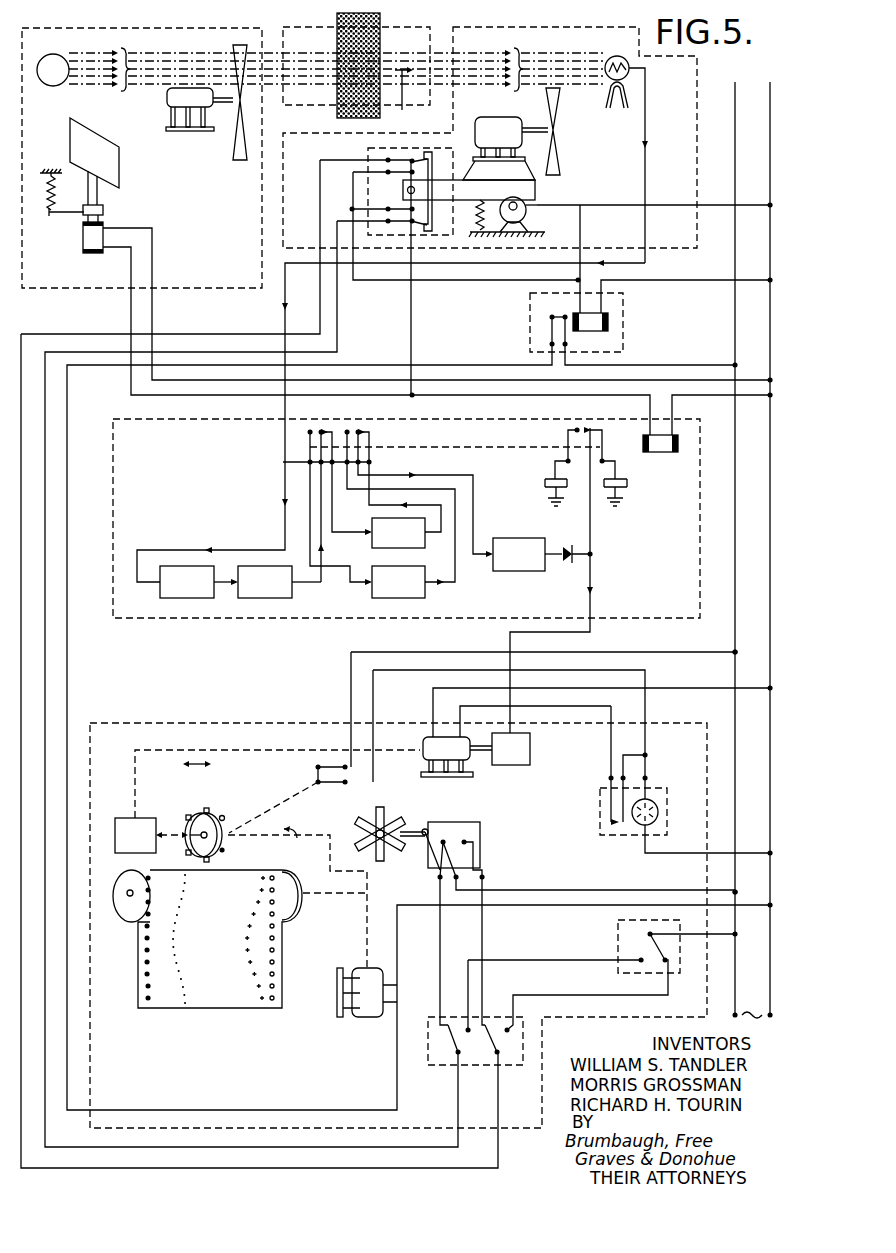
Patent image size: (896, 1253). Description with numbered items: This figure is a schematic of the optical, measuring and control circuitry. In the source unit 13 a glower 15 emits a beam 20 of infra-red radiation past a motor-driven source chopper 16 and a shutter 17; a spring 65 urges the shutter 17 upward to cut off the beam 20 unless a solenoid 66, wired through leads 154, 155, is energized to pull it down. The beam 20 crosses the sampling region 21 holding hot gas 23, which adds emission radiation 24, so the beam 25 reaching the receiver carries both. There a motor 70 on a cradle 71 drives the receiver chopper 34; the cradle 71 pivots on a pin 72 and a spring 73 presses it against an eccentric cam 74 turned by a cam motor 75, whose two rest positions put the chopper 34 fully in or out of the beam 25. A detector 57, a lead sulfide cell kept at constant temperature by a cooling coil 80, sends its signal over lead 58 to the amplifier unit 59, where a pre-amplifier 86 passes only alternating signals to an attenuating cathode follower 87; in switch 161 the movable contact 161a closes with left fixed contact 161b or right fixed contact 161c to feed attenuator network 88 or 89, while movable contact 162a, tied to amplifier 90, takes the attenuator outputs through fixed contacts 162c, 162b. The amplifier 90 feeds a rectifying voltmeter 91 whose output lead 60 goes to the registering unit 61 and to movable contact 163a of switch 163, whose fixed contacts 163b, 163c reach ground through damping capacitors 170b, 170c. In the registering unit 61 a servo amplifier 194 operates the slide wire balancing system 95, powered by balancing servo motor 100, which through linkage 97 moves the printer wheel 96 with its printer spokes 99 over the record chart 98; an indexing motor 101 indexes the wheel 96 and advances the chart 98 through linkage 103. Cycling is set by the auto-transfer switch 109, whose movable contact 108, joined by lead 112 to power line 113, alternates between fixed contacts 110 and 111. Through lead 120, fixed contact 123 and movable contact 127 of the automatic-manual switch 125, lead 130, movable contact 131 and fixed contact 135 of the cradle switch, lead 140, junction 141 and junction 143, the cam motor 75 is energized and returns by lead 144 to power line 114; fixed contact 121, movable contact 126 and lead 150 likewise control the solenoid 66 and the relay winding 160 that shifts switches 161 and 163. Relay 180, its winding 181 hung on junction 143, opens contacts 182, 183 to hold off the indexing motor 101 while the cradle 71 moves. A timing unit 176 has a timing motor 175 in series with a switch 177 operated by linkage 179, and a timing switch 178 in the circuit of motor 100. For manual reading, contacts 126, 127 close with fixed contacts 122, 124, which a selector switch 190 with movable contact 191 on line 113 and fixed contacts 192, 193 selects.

The source unit 13 is at (162, 28).
The glower 15 is at (54, 55).
The beam of infra-red radiation 20 is at (128, 56).
The source chopper 16 is at (236, 150).
The shutter 17 is at (116, 168).
The spring 65 is at (49, 194).
The solenoid 66 is at (83, 240).
The lead 154 is at (131, 312).
The lead 155 is at (149, 312).
The gas 23 is at (337, 20).
The sampling region 21 is at (398, 27).
The emission radiation 24 is at (403, 98).
The beam entering receiver unit 25 is at (522, 56).
The lead 130 is at (318, 198).
The movable contact 131 is at (386, 159).
The lead 140 is at (353, 196).
The junction 141 is at (352, 210).
The lead 150 is at (320, 1147).
The pin 72 is at (407, 191).
The fixed contact 135 is at (431, 273).
The cradle 71 is at (535, 191).
The electric motor 70 is at (500, 117).
The receiver chopper 34 is at (558, 152).
The eccentric cam 74 is at (512, 203).
The spring 73 is at (477, 218).
The electric motor 75 is at (522, 227).
The detector 57 is at (617, 56).
The cooling coil 80 is at (606, 100).
The electrical coupling means 58 is at (645, 172).
The lead 144 is at (669, 205).
The power line 113 is at (735, 138).
The power line 114 is at (770, 136).
The junction 143 is at (576, 283).
The relay winding 181 is at (590, 331).
The relay 180 is at (530, 318).
The fixed contact 183 is at (551, 330).
The movable contact 182 is at (551, 345).
The relay winding 160 is at (661, 453).
The amplifier unit 59 is at (113, 503).
The switch 161 is at (303, 471).
The movable contact 161a is at (307, 462).
The left hand fixed contact 161b is at (308, 433).
The right hand fixed contact 161c is at (345, 415).
The movable contact 162a is at (372, 462).
The left hand fixed contact 162b is at (348, 431).
The right hand fixed contact 162c is at (370, 433).
The pre-amplifier network 86 is at (199, 582).
The attenuating cathode follower 87 is at (279, 582).
The attenuator network 88 is at (398, 582).
The attenuator network 89 is at (398, 533).
The amplifier 90 is at (527, 554).
The rectifying voltmeter circuit 91 is at (571, 565).
The electrical coupling means 60 is at (598, 581).
The switch 163 is at (600, 500).
The movable contact 163a is at (565, 460).
The fixed contact 163b is at (567, 431).
The fixed contact 163c is at (596, 437).
The electrolytic capacitor 170b is at (545, 486).
The electrolytic capacitor 170c is at (628, 490).
The registering unit 61 is at (228, 723).
The switch 177 is at (318, 768).
The linkage 179 is at (290, 807).
The slide wire balancing system 95 is at (118, 818).
The mechanical linkage 97 is at (174, 848).
The printer wheel 96 is at (223, 852).
The printer spokes 99 is at (225, 820).
The linkage 103 is at (337, 895).
The movable contact 108 is at (438, 832).
The auto-transfer switch 109 is at (481, 836).
The fixed contact 111 is at (481, 858).
The fixed contact 110 is at (438, 862).
The lead 120 is at (483, 934).
The lead 112 is at (603, 890).
The balancing servo motor 100 is at (457, 777).
The servo amplifier 194 is at (530, 752).
The timing unit 176 is at (665, 788).
The timing switch 178 is at (611, 800).
The timing motor 175 is at (660, 812).
The record chart 98 is at (207, 939).
The indexing motor 101 is at (369, 1018).
The selector switch 190 is at (618, 936).
The movable contact 191 is at (649, 935).
The fixed contact 192 is at (640, 959).
The fixed contact 193 is at (666, 964).
The automatic-manual switch 125 is at (428, 1020).
The fixed contact 122 is at (467, 1028).
The fixed contact 124 is at (507, 1028).
The fixed contact 121 is at (446, 1035).
The movable contact 126 is at (456, 1053).
The fixed contact 123 is at (484, 1039).
The movable contact 127 is at (500, 1044).